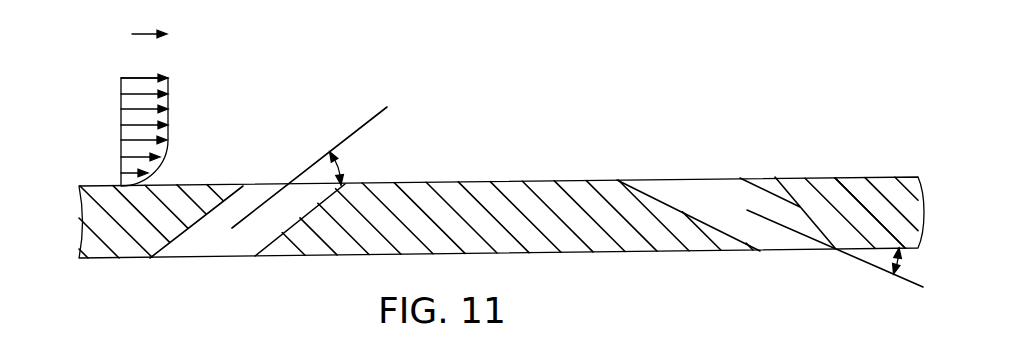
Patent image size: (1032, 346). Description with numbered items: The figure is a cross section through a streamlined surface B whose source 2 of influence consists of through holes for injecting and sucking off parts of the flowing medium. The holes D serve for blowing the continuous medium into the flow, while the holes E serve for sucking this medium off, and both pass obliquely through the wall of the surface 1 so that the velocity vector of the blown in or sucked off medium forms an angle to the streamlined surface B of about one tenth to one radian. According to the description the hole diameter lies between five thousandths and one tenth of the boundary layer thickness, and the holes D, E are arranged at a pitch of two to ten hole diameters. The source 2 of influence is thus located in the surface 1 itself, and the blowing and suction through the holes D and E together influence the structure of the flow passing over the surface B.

The surface 1 is at (523, 178).
The source of influence 2 is at (263, 197).
The holes for blowing in of the continuous medium D is at (276, 184).
The holes for sucking off the medium E is at (707, 178).
The streamlined surface B is at (847, 188).